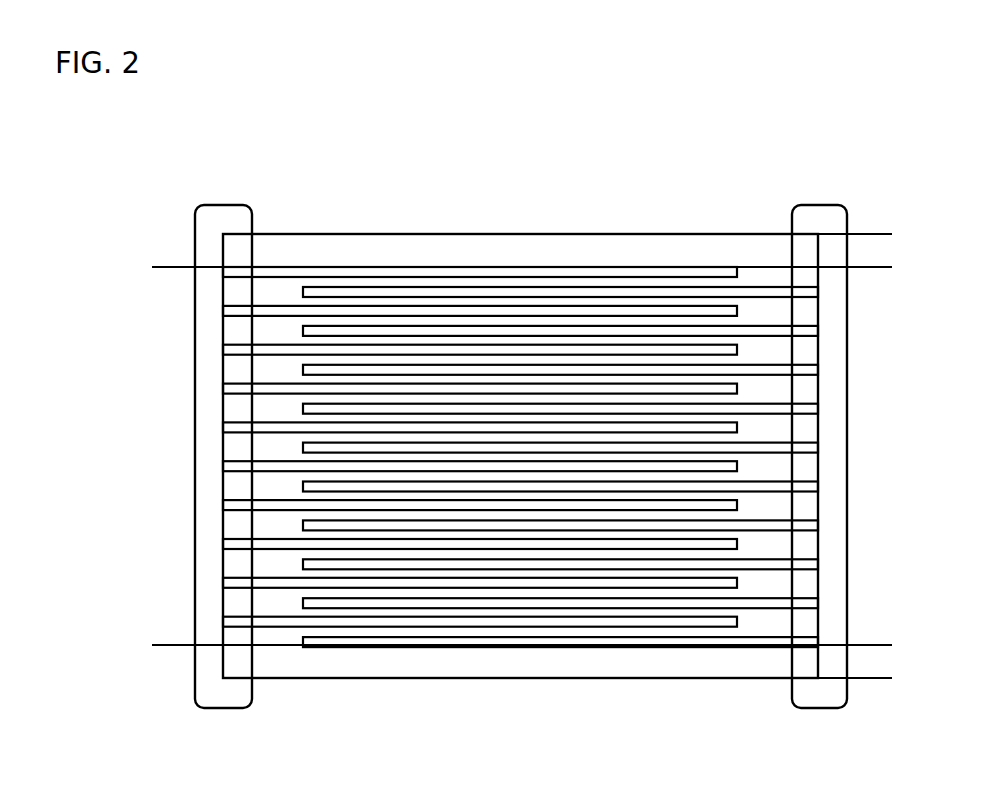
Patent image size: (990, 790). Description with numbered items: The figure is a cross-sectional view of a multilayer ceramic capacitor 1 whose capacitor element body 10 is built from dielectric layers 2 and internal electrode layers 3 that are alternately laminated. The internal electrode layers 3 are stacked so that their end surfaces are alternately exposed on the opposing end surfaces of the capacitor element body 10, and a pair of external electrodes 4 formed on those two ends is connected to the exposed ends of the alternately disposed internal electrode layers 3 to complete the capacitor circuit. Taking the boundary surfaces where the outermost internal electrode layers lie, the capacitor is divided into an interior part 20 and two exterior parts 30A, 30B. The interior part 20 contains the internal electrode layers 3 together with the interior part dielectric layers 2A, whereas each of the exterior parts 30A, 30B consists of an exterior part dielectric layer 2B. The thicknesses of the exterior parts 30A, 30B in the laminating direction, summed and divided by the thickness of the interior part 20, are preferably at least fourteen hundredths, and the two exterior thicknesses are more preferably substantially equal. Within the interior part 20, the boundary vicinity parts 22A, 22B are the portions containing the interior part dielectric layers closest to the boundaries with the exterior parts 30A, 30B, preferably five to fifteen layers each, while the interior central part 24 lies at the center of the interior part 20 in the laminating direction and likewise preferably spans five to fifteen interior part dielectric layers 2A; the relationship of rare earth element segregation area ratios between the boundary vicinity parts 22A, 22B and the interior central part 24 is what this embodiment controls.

The multilayer ceramic capacitor 1 is at (388, 715).
The dielectric layers 2 is at (443, 163).
The interior part dielectric layers 2A is at (432, 278).
The exterior part dielectric layer 2B is at (385, 253).
The internal electrode layers 3 is at (588, 270).
The external electrodes 4 is at (822, 220).
The capacitor element body 10 is at (672, 679).
The interior part 20 is at (892, 267).
The boundary vicinity part 22A is at (313, 318).
The boundary vicinity part 22B is at (313, 593).
The interior central part 24 is at (313, 422).
The exterior part 30A is at (892, 234).
The exterior part 30B is at (892, 645).